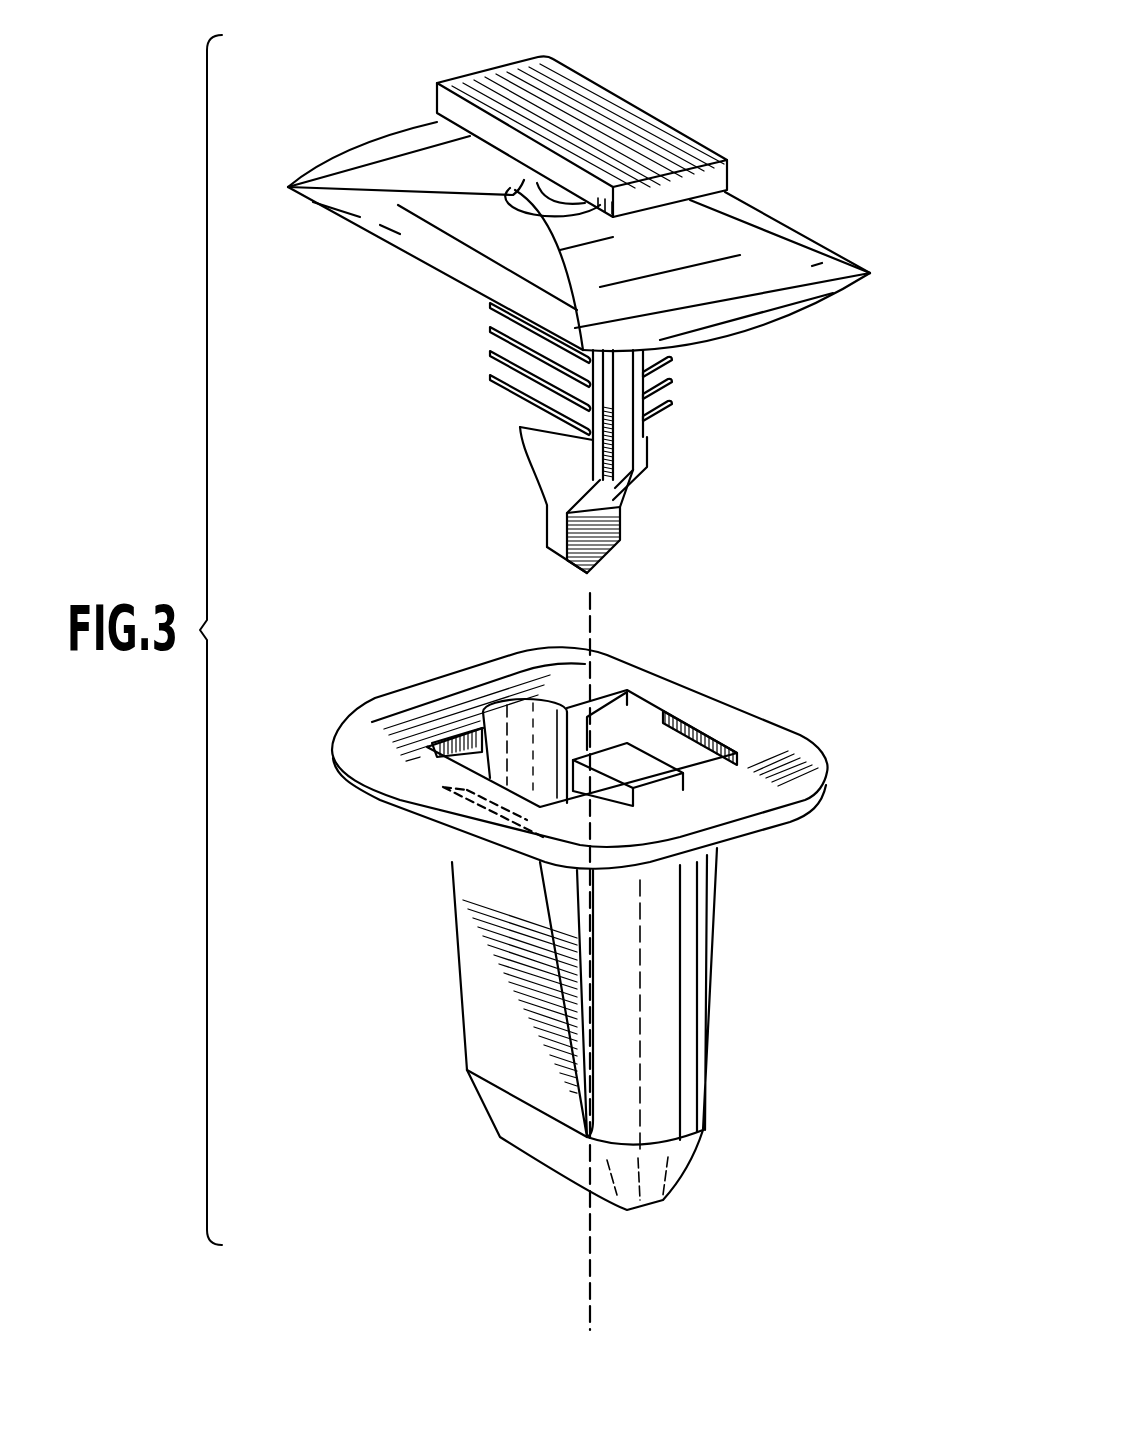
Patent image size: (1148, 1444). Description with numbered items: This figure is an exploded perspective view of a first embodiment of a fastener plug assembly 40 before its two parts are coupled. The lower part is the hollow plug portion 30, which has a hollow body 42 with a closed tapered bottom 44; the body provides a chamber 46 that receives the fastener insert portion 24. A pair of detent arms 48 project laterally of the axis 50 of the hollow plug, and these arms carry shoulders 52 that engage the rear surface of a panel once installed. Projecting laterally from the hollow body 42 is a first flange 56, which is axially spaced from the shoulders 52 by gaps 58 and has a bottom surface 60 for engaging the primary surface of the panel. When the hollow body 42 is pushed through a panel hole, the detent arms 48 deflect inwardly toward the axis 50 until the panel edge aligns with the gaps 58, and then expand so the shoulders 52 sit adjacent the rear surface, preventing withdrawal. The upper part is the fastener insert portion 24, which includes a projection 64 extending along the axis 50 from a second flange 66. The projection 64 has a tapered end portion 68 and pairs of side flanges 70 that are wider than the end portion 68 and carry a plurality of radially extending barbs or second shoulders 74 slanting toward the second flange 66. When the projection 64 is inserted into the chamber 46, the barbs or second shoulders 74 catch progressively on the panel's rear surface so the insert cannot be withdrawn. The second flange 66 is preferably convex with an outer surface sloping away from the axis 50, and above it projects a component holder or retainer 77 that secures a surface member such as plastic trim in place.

The fastener insert portion 24 is at (579, 180).
The hollow plug portion 30 is at (610, 907).
The fastener plug assembly 40 is at (612, 291).
The hollow body 42 is at (667, 1027).
The closed tapered bottom 44 is at (670, 1173).
The chamber 46 is at (647, 783).
The detent arms 48 is at (610, 770).
The axis 50 is at (590, 1302).
The shoulders 52 is at (650, 785).
The first flange 56 is at (453, 682).
The gaps 58 is at (480, 765).
The bottom surface 60 is at (610, 777).
The projection 64 is at (573, 438).
The second flange 66 is at (395, 150).
The tapered end portion 68 is at (613, 560).
The side flanges 70 is at (520, 427).
The barbs or second shoulders 74 is at (490, 378).
The component holder or retainer 77 is at (597, 90).